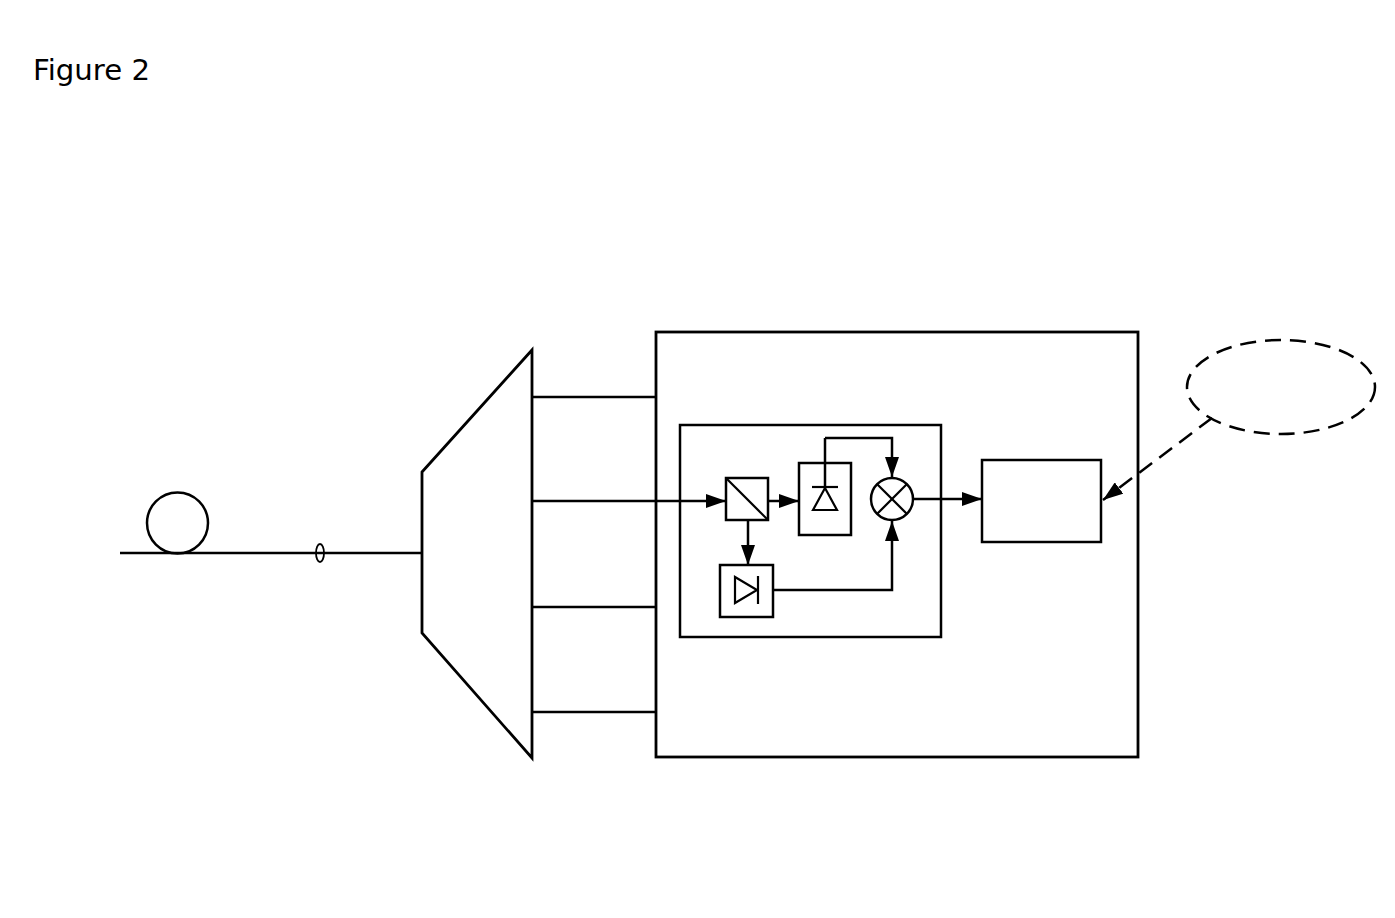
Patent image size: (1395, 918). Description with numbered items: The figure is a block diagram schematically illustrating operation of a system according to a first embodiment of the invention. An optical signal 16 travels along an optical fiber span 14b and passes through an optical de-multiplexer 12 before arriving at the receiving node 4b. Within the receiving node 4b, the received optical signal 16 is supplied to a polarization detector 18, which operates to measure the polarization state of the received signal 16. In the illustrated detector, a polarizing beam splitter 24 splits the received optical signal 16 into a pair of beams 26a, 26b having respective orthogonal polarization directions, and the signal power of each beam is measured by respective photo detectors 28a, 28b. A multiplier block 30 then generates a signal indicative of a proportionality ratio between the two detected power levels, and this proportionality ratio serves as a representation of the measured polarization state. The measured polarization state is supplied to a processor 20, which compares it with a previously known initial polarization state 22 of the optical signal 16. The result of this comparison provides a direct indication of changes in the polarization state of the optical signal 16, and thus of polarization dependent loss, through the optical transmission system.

The receiving node 4b is at (815, 331).
The optical de-multiplexer 12 is at (497, 390).
The optical fiber span 14b is at (320, 545).
The optical signal 16 is at (670, 500).
The polarization detector 18 is at (927, 425).
The processor 20 is at (1020, 460).
The initial polarization state 22 is at (1307, 342).
The polarizing beam splitter 24 is at (737, 478).
The beam 26a is at (748, 538).
The beam 26b is at (787, 497).
The photo detector 28a is at (775, 598).
The photo detector 28b is at (832, 535).
The multiplier block 30 is at (898, 477).